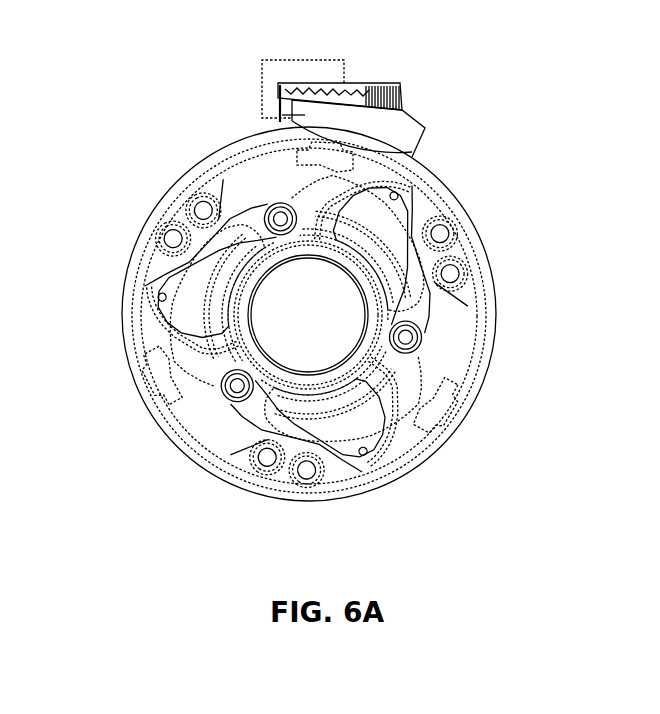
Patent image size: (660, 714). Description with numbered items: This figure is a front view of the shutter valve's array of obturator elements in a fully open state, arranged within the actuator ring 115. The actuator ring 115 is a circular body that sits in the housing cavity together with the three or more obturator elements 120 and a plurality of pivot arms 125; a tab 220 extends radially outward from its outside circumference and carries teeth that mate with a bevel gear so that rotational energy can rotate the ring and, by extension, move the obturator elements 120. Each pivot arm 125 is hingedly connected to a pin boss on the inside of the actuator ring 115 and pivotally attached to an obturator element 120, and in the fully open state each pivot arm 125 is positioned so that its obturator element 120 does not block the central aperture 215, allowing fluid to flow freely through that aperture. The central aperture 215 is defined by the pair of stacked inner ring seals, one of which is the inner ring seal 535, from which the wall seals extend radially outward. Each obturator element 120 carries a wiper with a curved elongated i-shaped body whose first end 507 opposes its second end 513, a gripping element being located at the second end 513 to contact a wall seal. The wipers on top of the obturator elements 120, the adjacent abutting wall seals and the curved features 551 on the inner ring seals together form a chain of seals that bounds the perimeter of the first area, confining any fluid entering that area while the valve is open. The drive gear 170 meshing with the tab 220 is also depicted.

The actuator ring 115 is at (420, 174).
The obturator element 120 is at (215, 295).
The pivot arm 125 is at (448, 250).
The drive gear 170 is at (377, 84).
The central aperture 215 is at (318, 352).
The tab 220 is at (280, 118).
The first end 507 is at (420, 350).
The second end 513 is at (414, 188).
The inner ring seal 535 is at (373, 310).
The curved feature 551 is at (393, 412).